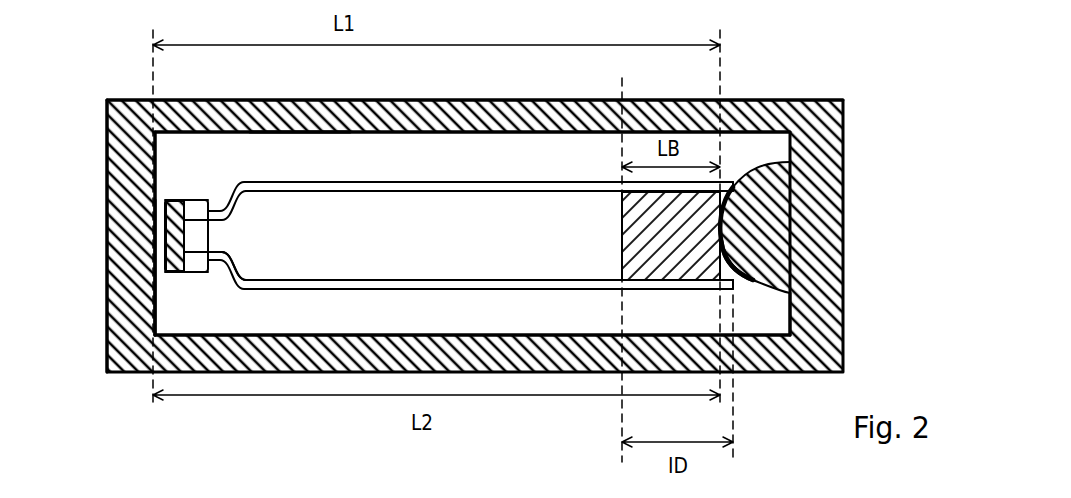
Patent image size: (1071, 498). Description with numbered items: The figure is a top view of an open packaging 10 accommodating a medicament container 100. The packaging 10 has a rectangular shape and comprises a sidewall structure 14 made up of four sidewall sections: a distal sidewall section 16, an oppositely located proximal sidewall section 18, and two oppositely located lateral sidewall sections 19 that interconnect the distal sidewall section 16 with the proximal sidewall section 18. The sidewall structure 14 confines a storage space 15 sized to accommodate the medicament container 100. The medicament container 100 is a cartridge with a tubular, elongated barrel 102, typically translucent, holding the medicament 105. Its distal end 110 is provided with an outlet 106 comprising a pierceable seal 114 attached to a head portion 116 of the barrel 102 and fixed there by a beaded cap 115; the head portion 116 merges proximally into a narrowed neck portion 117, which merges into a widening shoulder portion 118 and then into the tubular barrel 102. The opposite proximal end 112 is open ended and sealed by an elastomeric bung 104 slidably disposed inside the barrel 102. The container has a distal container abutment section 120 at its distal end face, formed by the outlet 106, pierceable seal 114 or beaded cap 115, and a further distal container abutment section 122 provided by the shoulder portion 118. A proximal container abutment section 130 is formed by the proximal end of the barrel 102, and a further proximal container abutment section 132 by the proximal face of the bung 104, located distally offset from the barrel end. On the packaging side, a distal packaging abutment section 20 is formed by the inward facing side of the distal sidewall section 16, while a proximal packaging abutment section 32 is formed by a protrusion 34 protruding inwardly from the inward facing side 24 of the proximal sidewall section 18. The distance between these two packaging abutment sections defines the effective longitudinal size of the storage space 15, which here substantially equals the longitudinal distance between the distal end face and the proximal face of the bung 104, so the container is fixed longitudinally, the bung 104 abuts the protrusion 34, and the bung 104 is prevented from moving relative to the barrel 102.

The packaging 10 is at (472, 64).
The sidewall structure 14 is at (799, 74).
The storage space 15 is at (300, 152).
The distal sidewall section 16 is at (107, 147).
The proximal sidewall section 18 is at (827, 219).
The lateral sidewall sections 19 is at (518, 100).
The distal packaging abutment section 20 is at (158, 168).
The inward facing side 24 is at (790, 312).
The proximal packaging abutment section 32 is at (622, 253).
The protrusion 34 is at (723, 228).
The medicament container 100 is at (450, 251).
The barrel 102 is at (481, 187).
The bung 104 is at (632, 238).
The medicament 105 is at (400, 242).
The outlet 106 is at (131, 254).
The distal end 110 is at (198, 293).
The proximal end 112 is at (683, 100).
The pierceable seal 114 is at (162, 236).
The beaded cap 115 is at (146, 263).
The head portion 116 is at (190, 262).
The neck portion 117 is at (219, 256).
The shoulder portion 118 is at (228, 260).
The distal container abutment section 120 is at (168, 210).
The distal container abutment section 122 is at (228, 296).
The proximal container abutment section 130 is at (790, 160).
The proximal container abutment section 132 is at (753, 270).